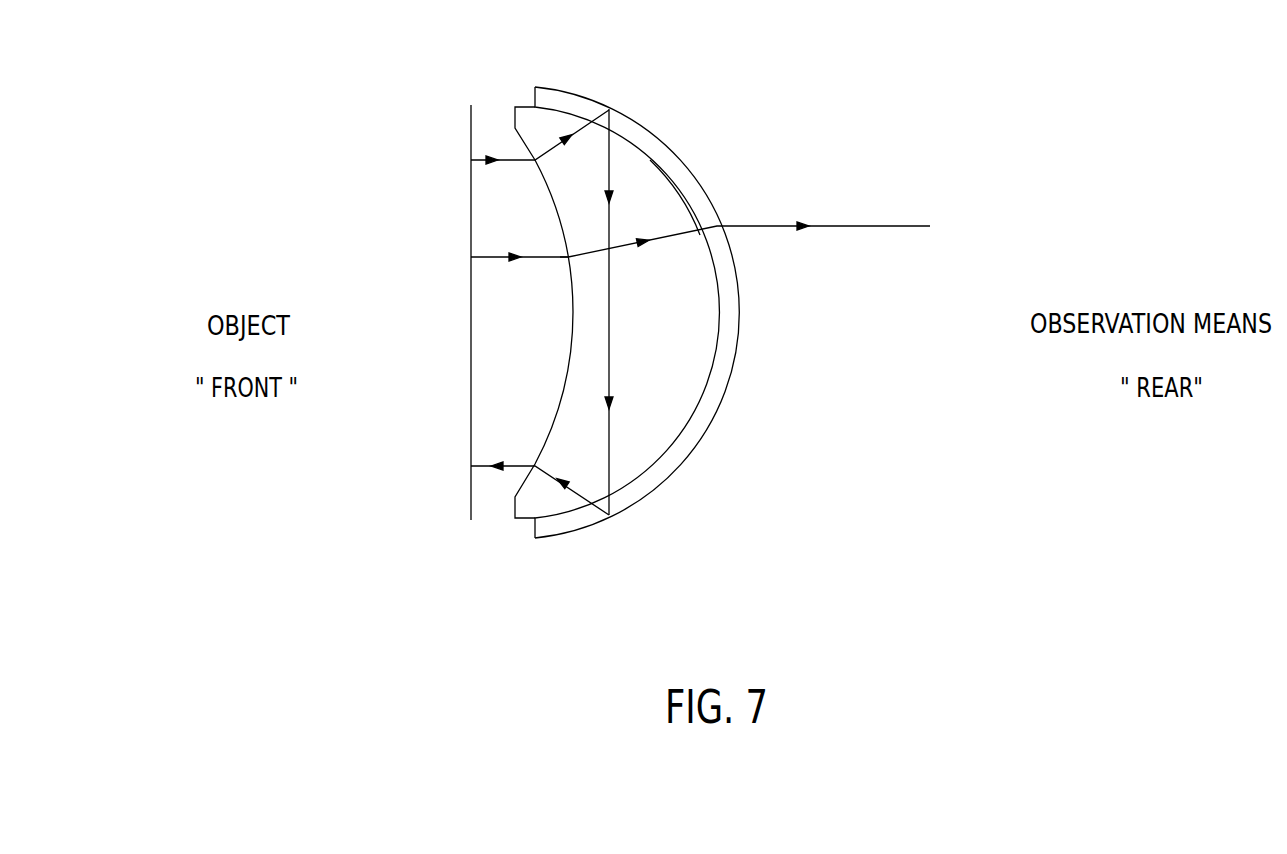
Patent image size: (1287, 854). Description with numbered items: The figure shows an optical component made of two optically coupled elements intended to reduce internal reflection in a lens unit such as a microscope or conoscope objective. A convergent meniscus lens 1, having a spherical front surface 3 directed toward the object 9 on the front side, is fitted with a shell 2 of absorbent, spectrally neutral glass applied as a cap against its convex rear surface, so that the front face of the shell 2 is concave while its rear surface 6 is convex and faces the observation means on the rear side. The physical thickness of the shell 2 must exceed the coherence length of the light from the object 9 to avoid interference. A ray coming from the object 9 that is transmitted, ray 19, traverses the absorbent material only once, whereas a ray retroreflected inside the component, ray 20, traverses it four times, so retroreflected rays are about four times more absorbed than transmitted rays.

The lens 1 is at (670, 395).
The shell 2 is at (681, 291).
The front surface 3 is at (612, 488).
The rear surface 6 is at (643, 127).
The object 9 is at (470, 400).
The transmitted ray 19 is at (758, 228).
The retroreflected ray 20 is at (612, 433).